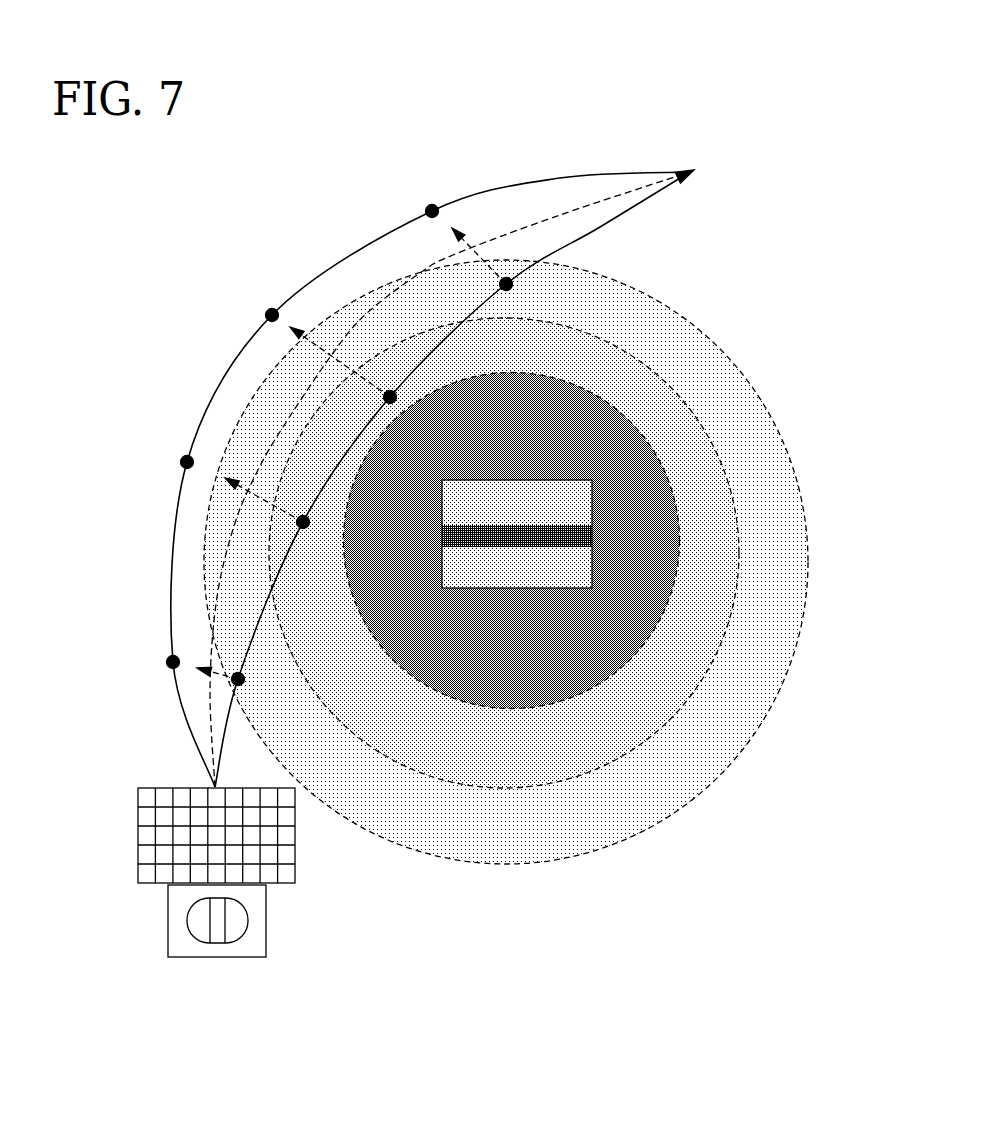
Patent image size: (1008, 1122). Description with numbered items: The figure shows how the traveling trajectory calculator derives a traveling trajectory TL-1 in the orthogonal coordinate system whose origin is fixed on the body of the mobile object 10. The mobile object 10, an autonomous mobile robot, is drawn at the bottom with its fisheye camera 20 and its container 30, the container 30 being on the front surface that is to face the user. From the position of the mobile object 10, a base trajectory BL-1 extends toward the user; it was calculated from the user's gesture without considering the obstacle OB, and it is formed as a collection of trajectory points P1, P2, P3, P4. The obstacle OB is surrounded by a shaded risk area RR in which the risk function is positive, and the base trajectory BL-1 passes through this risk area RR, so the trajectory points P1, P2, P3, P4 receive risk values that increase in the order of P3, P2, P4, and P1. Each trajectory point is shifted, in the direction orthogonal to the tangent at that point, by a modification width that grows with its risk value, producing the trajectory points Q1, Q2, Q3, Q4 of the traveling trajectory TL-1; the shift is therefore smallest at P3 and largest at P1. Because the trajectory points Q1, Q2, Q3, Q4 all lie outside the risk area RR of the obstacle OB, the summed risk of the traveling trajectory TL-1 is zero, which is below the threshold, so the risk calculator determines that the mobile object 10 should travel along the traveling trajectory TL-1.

The mobile object 10 is at (168, 915).
The fisheye camera 20 is at (248, 918).
The container 30 is at (138, 813).
The traveling trajectory TL-1 is at (218, 378).
The base trajectory BL-1 is at (610, 215).
The trajectory point Q1 is at (167, 662).
The trajectory point Q2 is at (180, 462).
The trajectory point Q3 is at (262, 311).
The trajectory point Q4 is at (428, 207).
The trajectory point P1 is at (238, 679).
The trajectory point P2 is at (303, 522).
The trajectory point P3 is at (390, 397).
The trajectory point P4 is at (506, 284).
The obstacle OB is at (593, 533).
The risk area RR is at (750, 738).